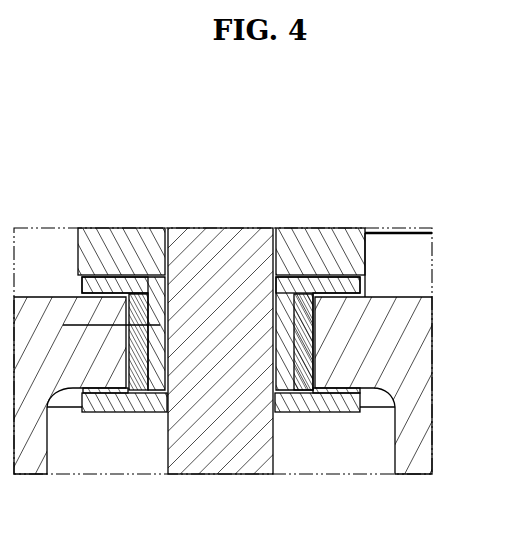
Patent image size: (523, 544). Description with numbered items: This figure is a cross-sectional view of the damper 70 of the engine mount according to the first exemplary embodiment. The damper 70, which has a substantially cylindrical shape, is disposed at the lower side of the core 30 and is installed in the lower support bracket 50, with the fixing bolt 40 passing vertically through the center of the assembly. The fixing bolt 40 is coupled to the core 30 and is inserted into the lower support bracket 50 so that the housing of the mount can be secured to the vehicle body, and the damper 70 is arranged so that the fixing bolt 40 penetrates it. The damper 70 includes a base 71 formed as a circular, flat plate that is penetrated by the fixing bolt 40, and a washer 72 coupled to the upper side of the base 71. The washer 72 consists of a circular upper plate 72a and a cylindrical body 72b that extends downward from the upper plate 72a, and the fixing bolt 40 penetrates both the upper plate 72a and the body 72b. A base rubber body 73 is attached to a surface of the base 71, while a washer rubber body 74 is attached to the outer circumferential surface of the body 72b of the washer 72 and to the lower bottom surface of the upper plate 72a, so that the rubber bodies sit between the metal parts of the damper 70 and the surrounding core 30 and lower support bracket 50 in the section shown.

The core 30 is at (143, 248).
The fixing bolt 40 is at (218, 254).
The lower support bracket 50 is at (371, 365).
The damper 70 is at (332, 277).
The base 71 is at (125, 406).
The washer 72 is at (307, 285).
The upper plate 72a is at (107, 285).
The body 72b is at (63, 325).
The base rubber body 73 is at (350, 393).
The washer rubber body 74 is at (305, 333).